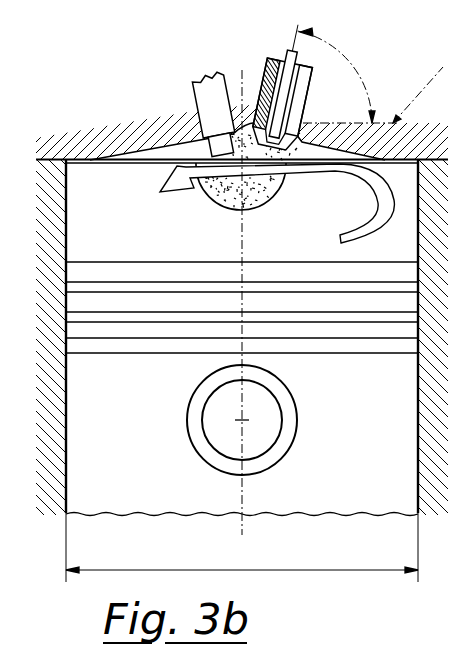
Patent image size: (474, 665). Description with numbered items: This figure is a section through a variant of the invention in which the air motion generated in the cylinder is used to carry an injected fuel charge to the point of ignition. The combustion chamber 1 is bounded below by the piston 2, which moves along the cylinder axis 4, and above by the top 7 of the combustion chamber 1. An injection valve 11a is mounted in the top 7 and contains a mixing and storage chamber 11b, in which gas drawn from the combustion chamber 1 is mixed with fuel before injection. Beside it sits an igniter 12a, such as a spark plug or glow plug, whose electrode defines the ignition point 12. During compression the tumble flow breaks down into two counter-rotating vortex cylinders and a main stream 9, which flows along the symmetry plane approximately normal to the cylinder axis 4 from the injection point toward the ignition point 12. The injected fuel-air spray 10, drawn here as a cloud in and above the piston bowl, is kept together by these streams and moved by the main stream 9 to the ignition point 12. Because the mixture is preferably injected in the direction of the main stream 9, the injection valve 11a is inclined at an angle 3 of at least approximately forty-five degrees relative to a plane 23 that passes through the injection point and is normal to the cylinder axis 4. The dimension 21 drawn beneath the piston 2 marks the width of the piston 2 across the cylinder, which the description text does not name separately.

The combustion chamber 1 is at (96, 229).
The piston 2 is at (350, 478).
The angle 3 is at (343, 58).
The cylinder axis 4 is at (246, 523).
The top of the combustion chamber 7 is at (148, 155).
The main stream 9 is at (370, 185).
The fuel-air spray 10 is at (220, 198).
The injection valve 11a is at (320, 82).
The mixing and storage chamber 11b is at (299, 68).
The ignition point 12 is at (212, 157).
The igniter 12a is at (218, 93).
The cylinder bore 21 is at (197, 568).
The plane 23 is at (428, 85).